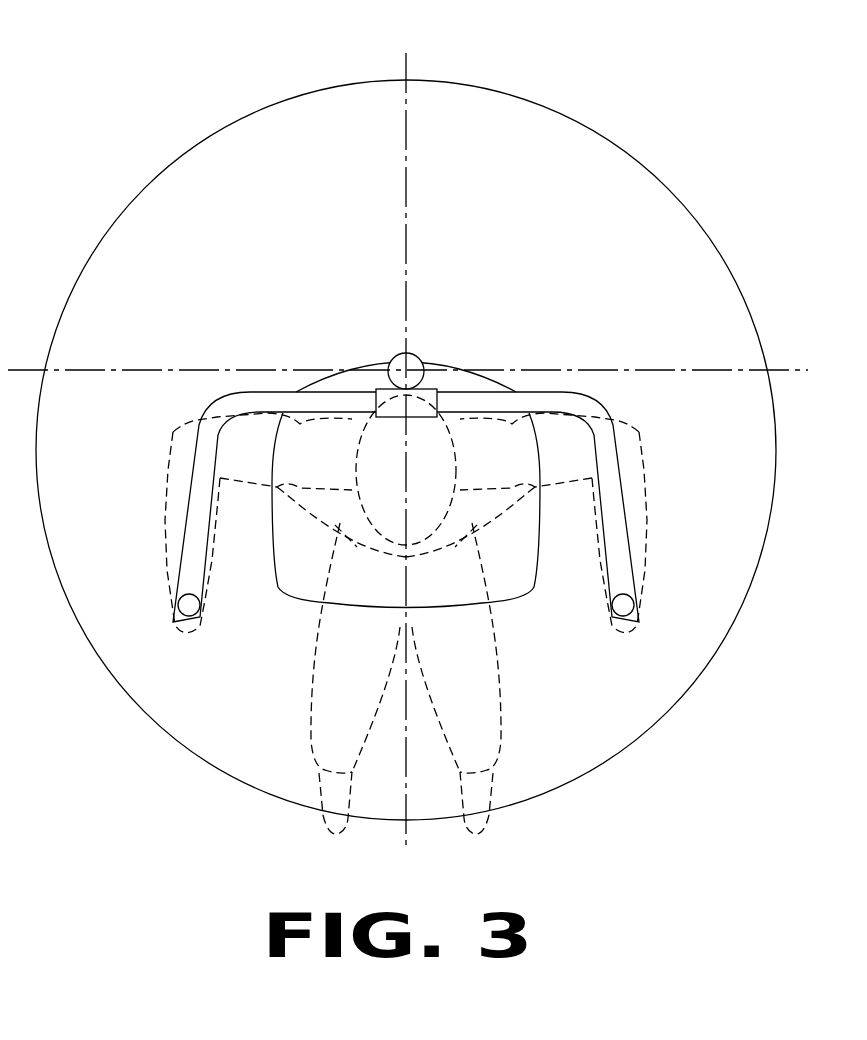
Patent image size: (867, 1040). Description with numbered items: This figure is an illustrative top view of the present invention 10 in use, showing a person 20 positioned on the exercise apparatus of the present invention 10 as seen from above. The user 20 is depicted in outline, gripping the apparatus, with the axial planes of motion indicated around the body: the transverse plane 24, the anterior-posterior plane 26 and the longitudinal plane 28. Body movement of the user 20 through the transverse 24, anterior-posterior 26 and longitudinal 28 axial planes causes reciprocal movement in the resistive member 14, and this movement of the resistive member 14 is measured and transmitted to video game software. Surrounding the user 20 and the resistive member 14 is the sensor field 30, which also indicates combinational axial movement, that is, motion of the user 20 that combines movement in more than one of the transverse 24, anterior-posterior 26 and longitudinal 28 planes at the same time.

The present invention 10 is at (600, 340).
The resistive member 14 is at (396, 355).
The person 20 is at (487, 700).
The transverse axial plane 24 is at (25, 369).
The anterior-posterior axial plane 26 is at (406, 432).
The longitudinal axial plane 28 is at (415, 354).
The sensor field 30 is at (243, 700).